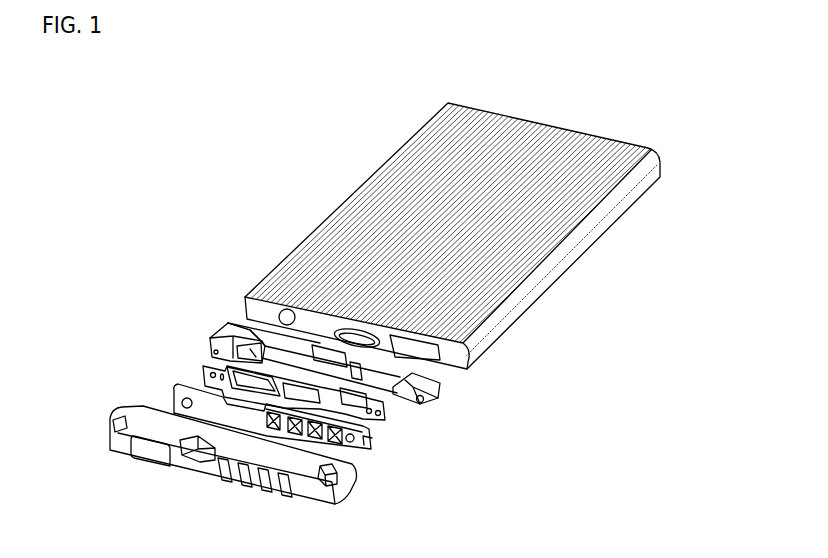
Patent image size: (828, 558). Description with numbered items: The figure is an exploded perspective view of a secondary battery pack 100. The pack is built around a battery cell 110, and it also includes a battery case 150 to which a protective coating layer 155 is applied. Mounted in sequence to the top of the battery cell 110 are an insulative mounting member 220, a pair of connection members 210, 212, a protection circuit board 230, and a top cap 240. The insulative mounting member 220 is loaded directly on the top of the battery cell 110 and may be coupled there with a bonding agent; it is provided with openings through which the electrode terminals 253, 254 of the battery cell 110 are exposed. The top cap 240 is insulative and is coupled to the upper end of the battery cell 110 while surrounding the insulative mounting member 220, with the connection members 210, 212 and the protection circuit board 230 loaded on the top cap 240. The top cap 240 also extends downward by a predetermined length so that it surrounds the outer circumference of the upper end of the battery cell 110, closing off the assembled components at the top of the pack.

The secondary battery pack 100 is at (82, 128).
The battery cell 110 is at (594, 294).
The battery case 150 is at (617, 225).
The protective coating layer 155 is at (358, 220).
The electrode terminal 253 is at (354, 341).
The electrode terminal 254 is at (414, 347).
The connection member 210 is at (387, 418).
The insulative mounting member 220 is at (213, 334).
The connection member 212 is at (207, 367).
The protection circuit board 230 is at (377, 435).
The top cap 240 is at (118, 418).